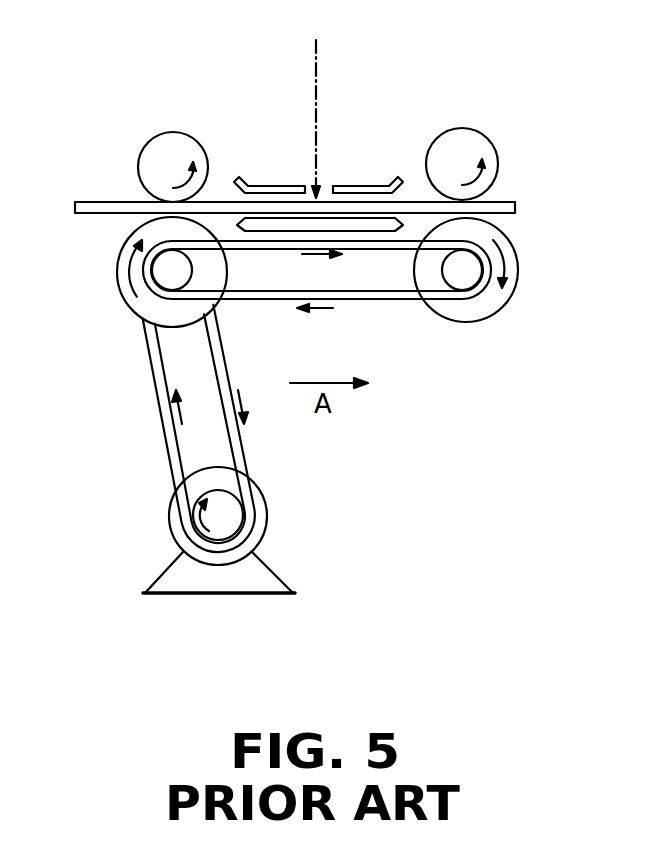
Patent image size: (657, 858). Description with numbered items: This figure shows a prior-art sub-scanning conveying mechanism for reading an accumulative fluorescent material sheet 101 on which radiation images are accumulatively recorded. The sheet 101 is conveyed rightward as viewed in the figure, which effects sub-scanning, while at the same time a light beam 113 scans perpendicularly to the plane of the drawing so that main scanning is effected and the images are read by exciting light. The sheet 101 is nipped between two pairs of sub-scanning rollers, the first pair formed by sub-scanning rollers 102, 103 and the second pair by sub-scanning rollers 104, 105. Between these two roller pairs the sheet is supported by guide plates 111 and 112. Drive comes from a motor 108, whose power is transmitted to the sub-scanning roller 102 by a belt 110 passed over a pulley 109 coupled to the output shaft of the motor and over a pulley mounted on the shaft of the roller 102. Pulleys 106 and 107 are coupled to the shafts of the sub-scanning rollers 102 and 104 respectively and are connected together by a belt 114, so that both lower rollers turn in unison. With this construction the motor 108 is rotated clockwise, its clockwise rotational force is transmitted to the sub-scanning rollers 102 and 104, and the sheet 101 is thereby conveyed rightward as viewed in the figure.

The accumulative fluorescent material sheet 101 is at (100, 202).
The sub-scanning roller 102 is at (128, 310).
The sub-scanning roller 103 is at (163, 145).
The sub-scanning roller 104 is at (492, 303).
The sub-scanning roller 105 is at (477, 147).
The pulley 106 is at (165, 270).
The pulley 107 is at (467, 267).
The motor 108 is at (262, 580).
The pulley 109 is at (222, 537).
The belt 110 is at (163, 430).
The guide plate 111 is at (272, 185).
The guide plate 112 is at (360, 228).
The light beam 113 is at (316, 70).
The belt 114 is at (363, 298).